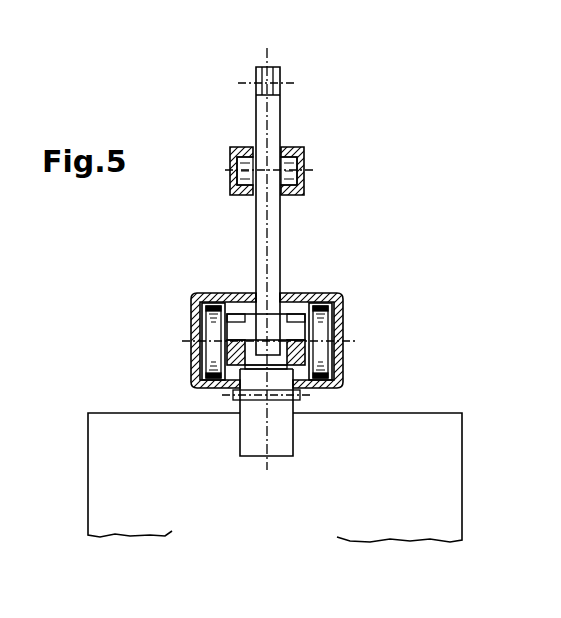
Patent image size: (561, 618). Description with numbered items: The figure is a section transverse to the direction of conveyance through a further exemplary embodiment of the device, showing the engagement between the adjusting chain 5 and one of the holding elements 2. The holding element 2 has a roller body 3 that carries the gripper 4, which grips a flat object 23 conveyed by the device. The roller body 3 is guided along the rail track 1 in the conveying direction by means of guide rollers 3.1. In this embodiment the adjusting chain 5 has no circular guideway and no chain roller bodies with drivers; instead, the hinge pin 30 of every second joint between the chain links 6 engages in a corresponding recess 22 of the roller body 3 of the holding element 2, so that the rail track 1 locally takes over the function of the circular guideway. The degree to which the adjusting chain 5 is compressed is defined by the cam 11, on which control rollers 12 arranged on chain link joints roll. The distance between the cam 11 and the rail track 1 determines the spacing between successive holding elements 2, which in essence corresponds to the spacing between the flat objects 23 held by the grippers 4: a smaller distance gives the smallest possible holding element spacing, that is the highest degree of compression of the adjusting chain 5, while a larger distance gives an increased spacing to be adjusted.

The rail track 1 is at (345, 320).
The holding element 2 is at (160, 387).
The roller body 3 is at (307, 357).
The guide roller 3.1 is at (322, 300).
The gripper 4 is at (255, 442).
The adjusting chain 5 is at (196, 136).
The chain link 6 is at (270, 235).
The cam 11 is at (298, 148).
The control roller 12 is at (305, 163).
The recess 22 is at (287, 298).
The object 23 is at (406, 491).
The hinge pin 30 is at (250, 333).